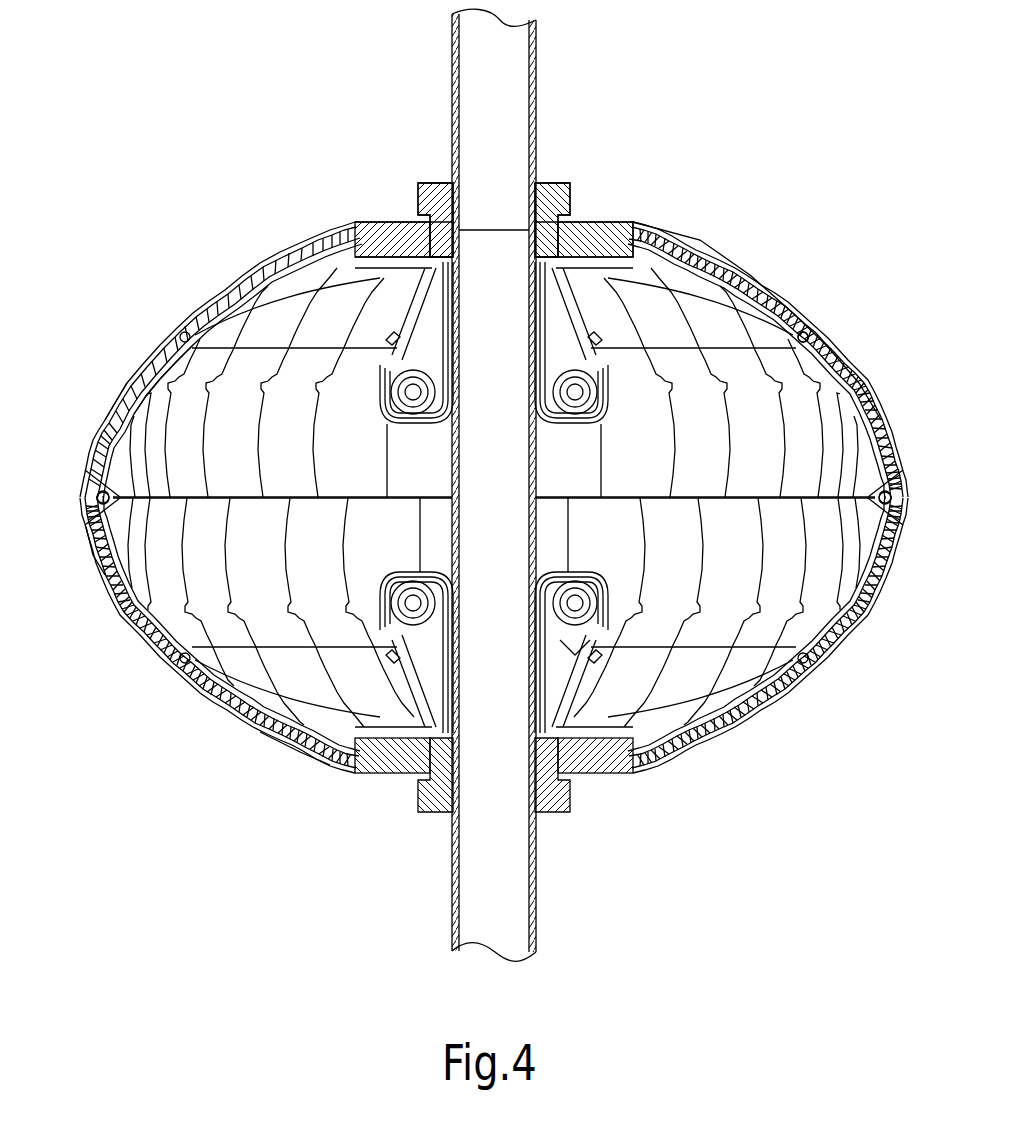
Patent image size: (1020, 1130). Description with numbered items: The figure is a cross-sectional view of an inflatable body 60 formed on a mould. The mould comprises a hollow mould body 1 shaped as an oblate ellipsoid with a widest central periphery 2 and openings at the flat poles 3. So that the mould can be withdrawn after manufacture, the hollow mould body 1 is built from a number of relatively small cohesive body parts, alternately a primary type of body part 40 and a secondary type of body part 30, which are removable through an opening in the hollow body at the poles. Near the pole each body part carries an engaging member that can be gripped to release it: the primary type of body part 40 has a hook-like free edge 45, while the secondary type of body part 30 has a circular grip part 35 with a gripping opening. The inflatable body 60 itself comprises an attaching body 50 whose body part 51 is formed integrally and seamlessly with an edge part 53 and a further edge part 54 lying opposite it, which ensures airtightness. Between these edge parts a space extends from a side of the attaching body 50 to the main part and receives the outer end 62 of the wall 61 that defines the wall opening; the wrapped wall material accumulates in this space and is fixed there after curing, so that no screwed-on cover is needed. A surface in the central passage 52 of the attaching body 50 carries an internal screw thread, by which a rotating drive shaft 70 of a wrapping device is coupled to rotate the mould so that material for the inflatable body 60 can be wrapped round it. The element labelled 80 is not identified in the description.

The hollow mould body 1 is at (770, 330).
The widest central periphery 2 is at (132, 425).
The flat poles 3 is at (318, 746).
The secondary type of body part 30 is at (243, 380).
The circular grip part 35 is at (657, 300).
The primary type of body part 40 is at (180, 418).
The hook-like free edge 45 is at (560, 655).
The attaching body 50 is at (416, 221).
The body part 51 is at (571, 224).
The central passage 52 is at (490, 238).
The edge part 53 is at (330, 240).
The further edge part 54 is at (348, 222).
The inflatable body 60 is at (120, 616).
The wall 61 is at (858, 368).
The outer end of wall 62 is at (632, 222).
The rotating drive shaft 70 is at (534, 118).
The fastener 80 is at (826, 332).